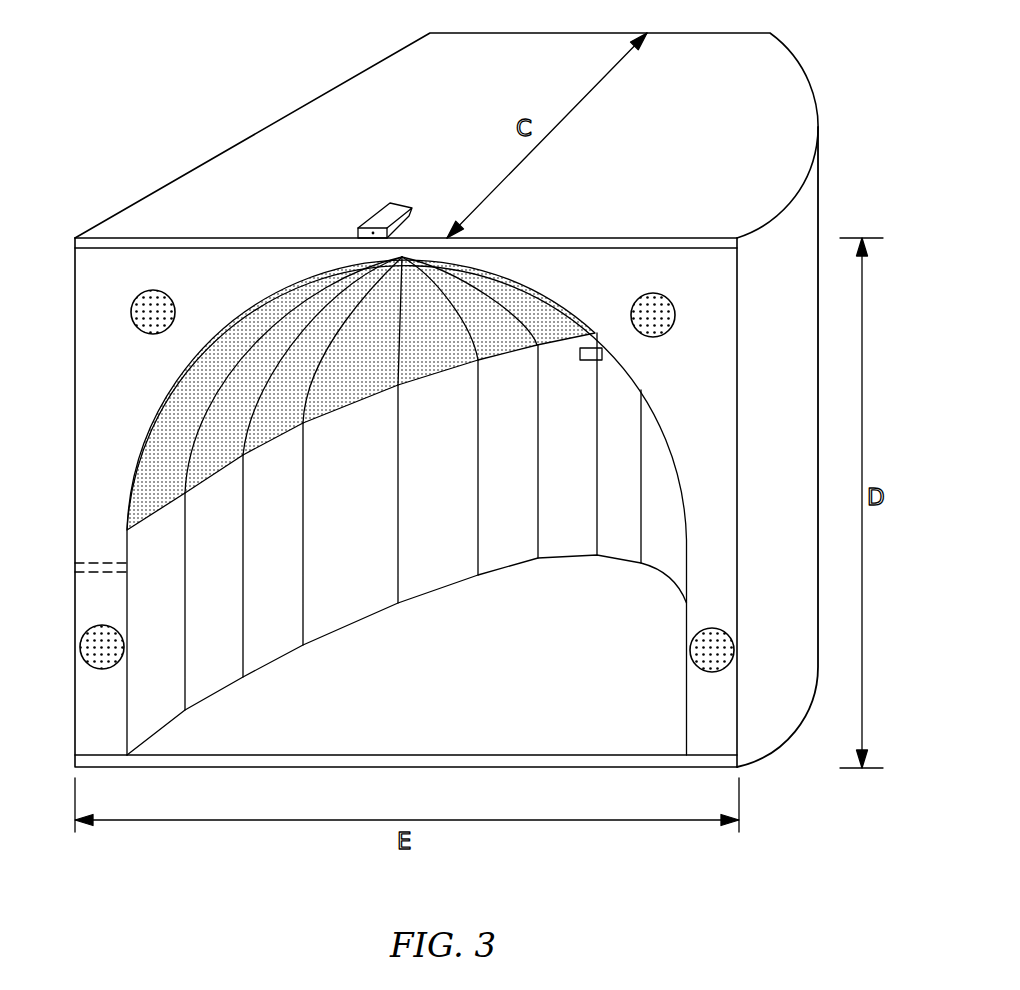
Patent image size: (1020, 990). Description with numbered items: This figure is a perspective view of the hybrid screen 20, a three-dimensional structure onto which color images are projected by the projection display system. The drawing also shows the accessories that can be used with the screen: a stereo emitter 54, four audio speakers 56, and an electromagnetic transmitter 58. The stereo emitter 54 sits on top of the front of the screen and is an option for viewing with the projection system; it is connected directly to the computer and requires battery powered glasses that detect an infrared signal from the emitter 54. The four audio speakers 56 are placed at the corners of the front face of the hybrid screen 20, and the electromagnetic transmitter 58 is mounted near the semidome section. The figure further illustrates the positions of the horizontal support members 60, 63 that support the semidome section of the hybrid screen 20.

The hybrid screen 20 is at (833, 157).
The stereo emitter 54 is at (362, 228).
The audio speakers 56 is at (134, 306).
The electromagnetic transmitter 58 is at (583, 360).
The horizontal support member 60 is at (75, 238).
The horizontal support member 63 is at (93, 562).